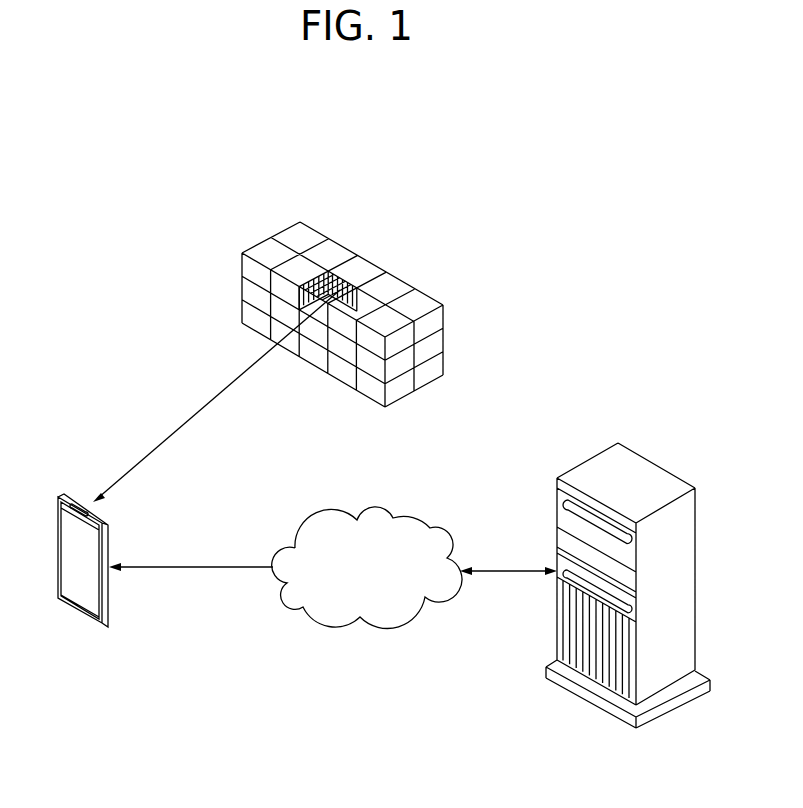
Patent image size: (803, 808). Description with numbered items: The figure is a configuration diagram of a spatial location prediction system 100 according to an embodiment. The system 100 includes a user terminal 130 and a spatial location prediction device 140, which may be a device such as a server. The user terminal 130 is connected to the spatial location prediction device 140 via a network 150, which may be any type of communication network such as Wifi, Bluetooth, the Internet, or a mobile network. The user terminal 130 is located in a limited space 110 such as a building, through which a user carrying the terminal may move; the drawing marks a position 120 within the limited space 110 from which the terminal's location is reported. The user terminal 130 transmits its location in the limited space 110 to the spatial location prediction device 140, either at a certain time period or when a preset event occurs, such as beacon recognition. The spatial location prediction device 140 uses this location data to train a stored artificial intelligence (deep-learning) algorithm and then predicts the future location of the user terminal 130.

The spatial location prediction system 100 is at (565, 151).
The limited space 110 is at (445, 322).
The selected storage cell 120 is at (330, 272).
The user terminal 130 is at (77, 613).
The spatial location prediction device 140 is at (657, 463).
The network 150 is at (383, 505).